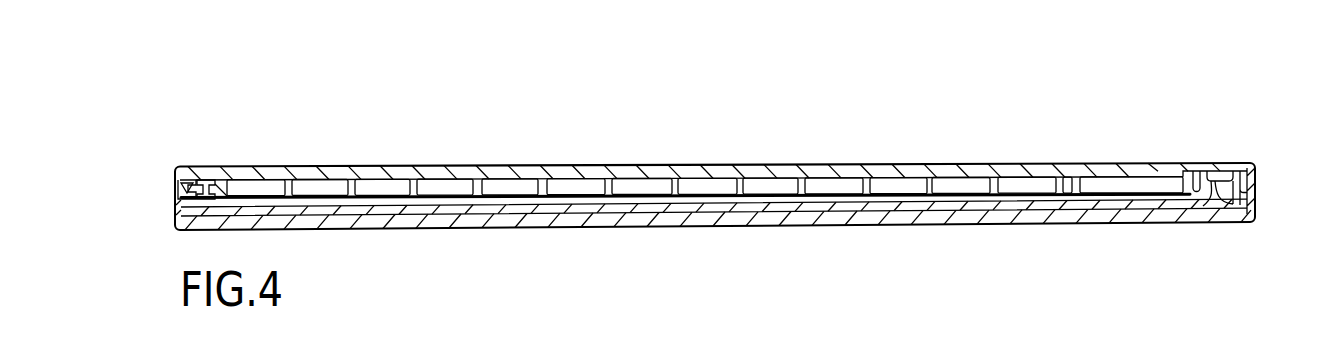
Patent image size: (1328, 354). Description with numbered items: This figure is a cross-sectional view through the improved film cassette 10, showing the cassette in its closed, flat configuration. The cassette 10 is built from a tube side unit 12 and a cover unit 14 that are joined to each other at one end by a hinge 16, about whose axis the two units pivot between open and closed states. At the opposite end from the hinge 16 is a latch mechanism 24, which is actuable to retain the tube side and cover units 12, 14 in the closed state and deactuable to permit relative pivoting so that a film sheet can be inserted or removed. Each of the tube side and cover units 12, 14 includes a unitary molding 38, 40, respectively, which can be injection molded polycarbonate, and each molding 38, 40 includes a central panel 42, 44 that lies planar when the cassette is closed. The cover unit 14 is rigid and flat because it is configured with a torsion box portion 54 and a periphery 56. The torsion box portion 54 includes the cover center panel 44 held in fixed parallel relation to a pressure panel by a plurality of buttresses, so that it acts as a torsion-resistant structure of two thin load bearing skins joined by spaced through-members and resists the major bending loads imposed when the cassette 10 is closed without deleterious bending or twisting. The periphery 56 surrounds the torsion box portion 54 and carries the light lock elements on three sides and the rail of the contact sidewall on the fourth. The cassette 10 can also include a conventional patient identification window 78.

The film cassette 10 is at (768, 66).
The tube side unit 12 is at (715, 245).
The cover unit 14 is at (715, 135).
The hinge 16 is at (178, 175).
The latch mechanism 24 is at (1248, 227).
The molding 38 is at (715, 245).
The molding 40 is at (715, 135).
The central panel 42 is at (790, 228).
The cover center panel 44 is at (803, 163).
The torsion box portion 54 is at (510, 158).
The periphery 56 is at (1203, 162).
The patient identification window 78 is at (1145, 153).